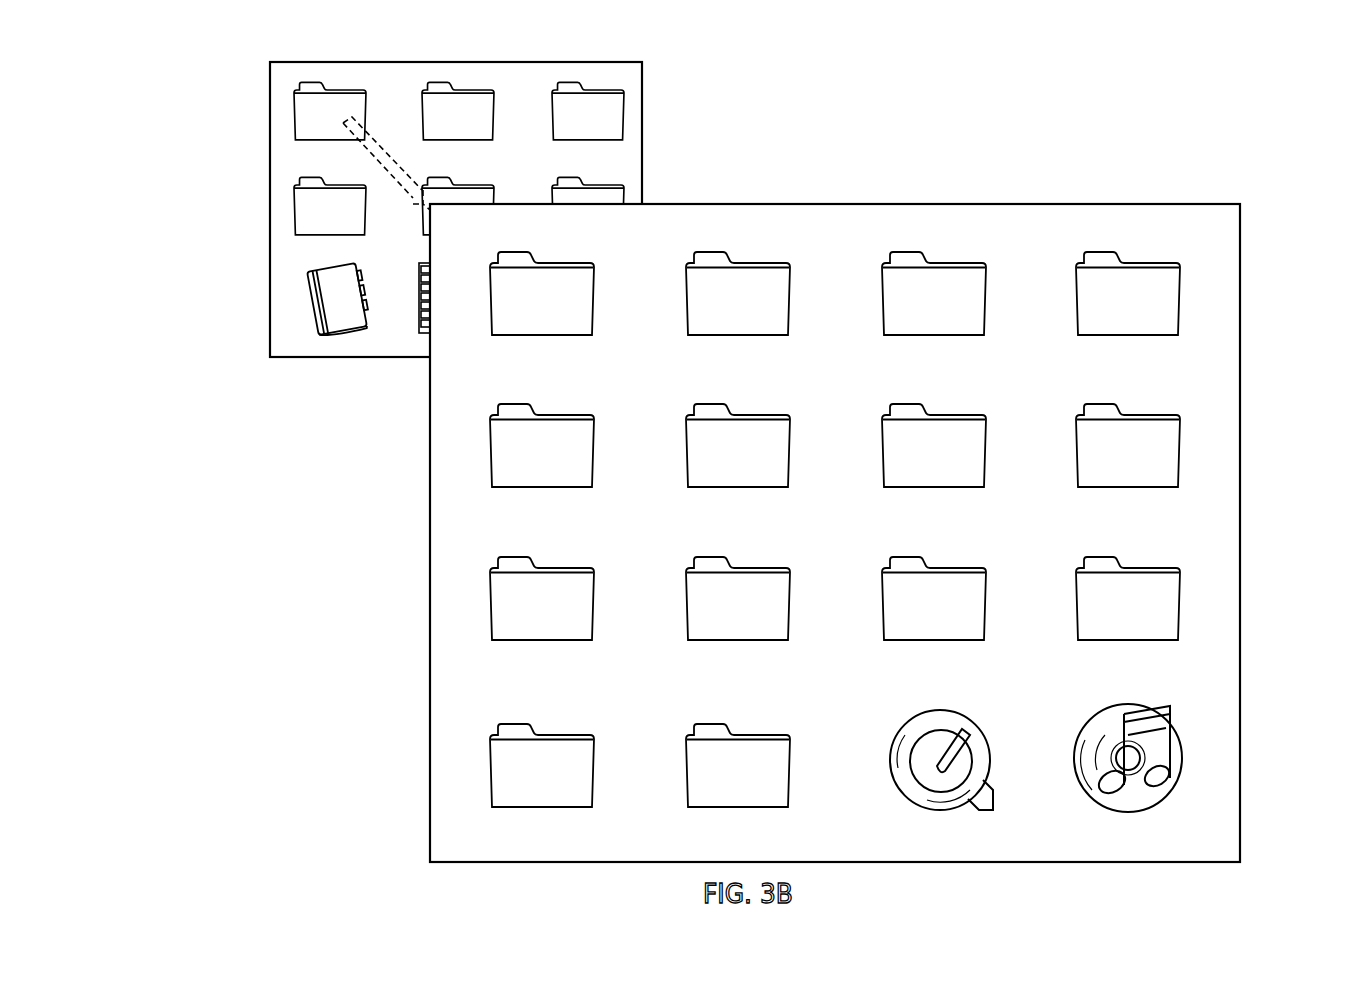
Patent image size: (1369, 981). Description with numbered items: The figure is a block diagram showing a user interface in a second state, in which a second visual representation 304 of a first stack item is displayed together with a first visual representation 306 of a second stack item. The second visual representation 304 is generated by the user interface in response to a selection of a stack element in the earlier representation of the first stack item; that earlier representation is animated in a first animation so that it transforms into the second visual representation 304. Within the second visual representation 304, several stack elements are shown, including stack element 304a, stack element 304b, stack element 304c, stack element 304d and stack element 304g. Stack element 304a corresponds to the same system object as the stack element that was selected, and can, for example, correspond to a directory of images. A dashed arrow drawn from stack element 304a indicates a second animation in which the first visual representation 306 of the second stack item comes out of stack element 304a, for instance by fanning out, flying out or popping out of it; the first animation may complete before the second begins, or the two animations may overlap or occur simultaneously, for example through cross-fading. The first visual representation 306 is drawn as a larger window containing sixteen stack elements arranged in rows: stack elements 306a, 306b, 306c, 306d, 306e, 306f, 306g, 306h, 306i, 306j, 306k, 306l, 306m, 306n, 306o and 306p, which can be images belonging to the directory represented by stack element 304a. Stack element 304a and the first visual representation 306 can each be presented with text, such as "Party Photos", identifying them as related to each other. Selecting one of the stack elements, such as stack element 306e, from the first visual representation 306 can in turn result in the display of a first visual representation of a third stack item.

The second visual representation of the first stack item 304 is at (270, 120).
The stack element 304a is at (343, 88).
The stack element 304b is at (467, 88).
The stack element 304c is at (595, 88).
The stack element 304d is at (294, 210).
The stack element 304g is at (306, 303).
The first visual representation of the second stack item 306 is at (1078, 204).
The stack element 306a is at (595, 294).
The stack element 306b is at (791, 294).
The stack element 306c is at (986, 294).
The stack element 306d is at (1180, 300).
The stack element 306e is at (595, 443).
The stack element 306f is at (791, 443).
The stack element 306g is at (986, 443).
The stack element 306h is at (1180, 453).
The stack element 306i is at (595, 597).
The stack element 306j is at (791, 597).
The stack element 306k is at (986, 597).
The stack element 306l is at (1180, 600).
The stack element 306m is at (592, 763).
The stack element 306n is at (788, 763).
The stack element 306o is at (988, 755).
The stack element 306p is at (1182, 758).